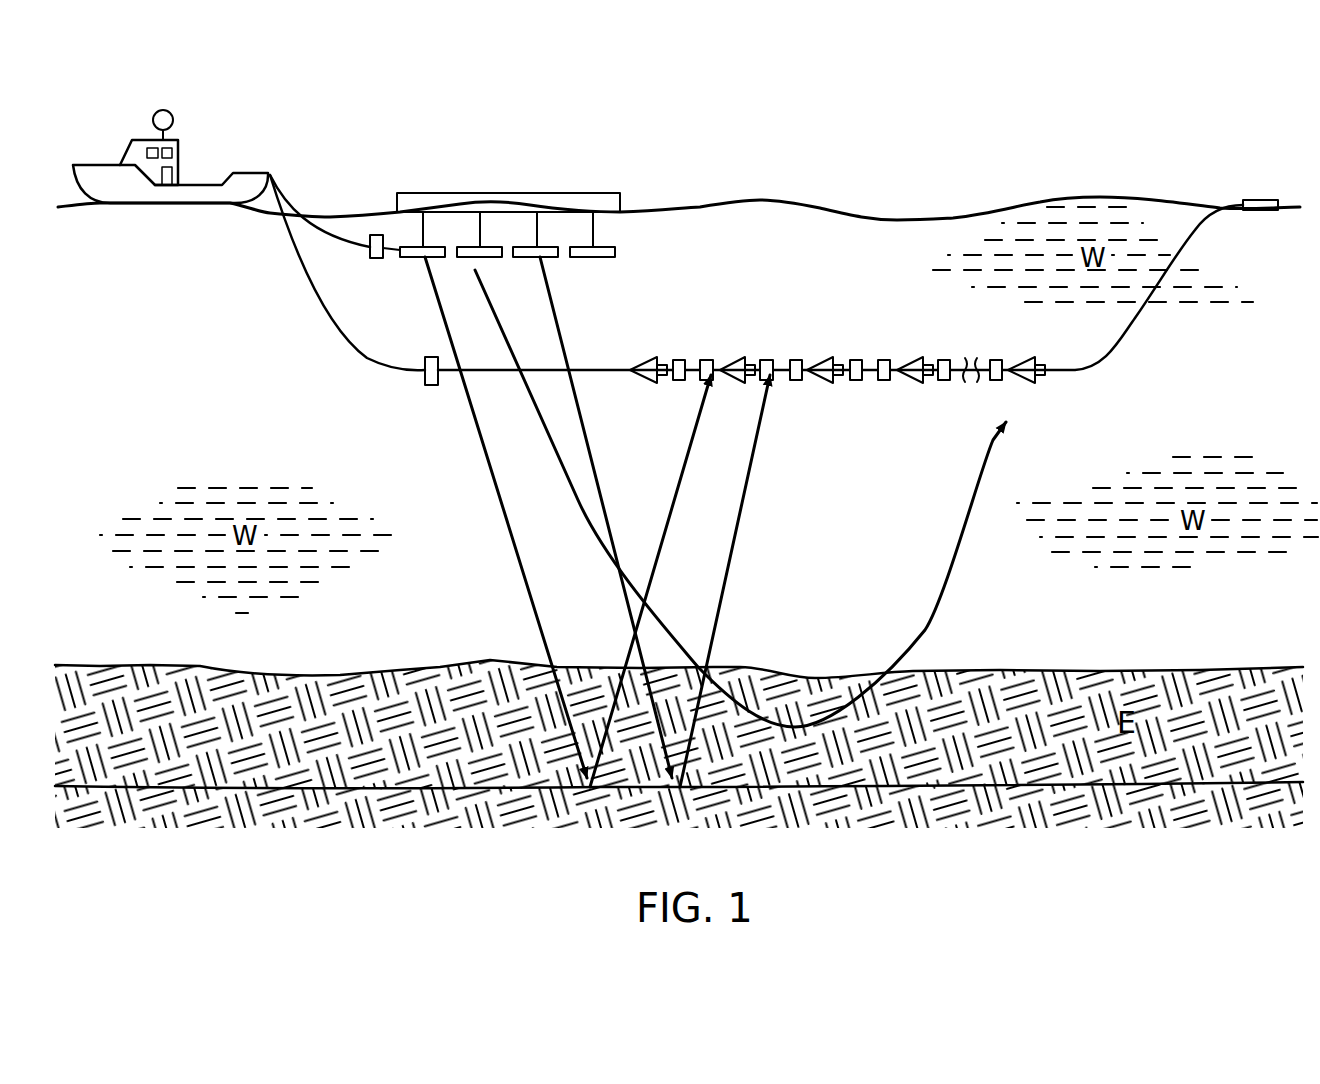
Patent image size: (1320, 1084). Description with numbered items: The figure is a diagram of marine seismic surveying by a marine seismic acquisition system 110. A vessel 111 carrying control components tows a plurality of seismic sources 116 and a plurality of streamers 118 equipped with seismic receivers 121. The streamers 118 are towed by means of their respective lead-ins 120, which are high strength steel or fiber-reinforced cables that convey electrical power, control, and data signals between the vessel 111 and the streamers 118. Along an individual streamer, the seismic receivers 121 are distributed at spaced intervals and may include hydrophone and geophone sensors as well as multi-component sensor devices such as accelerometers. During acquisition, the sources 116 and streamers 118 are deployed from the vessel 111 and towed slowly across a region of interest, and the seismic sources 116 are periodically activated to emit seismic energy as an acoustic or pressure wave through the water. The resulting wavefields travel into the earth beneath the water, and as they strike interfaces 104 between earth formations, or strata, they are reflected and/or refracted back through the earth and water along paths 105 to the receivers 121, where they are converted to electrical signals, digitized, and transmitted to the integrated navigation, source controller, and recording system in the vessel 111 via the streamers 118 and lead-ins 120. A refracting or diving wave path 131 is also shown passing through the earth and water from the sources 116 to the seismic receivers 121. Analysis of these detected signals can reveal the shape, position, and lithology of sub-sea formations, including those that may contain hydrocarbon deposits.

The marine seismic acquisition system 110 is at (957, 108).
The vessel 111 is at (98, 163).
The lead-ins 120 is at (317, 290).
The seismic sources 116 is at (595, 258).
The streamers 118 is at (867, 373).
The seismic receivers 121 is at (767, 360).
The paths 105 is at (667, 520).
The refracting or diving wave path 131 is at (928, 617).
The interfaces 104 is at (967, 783).